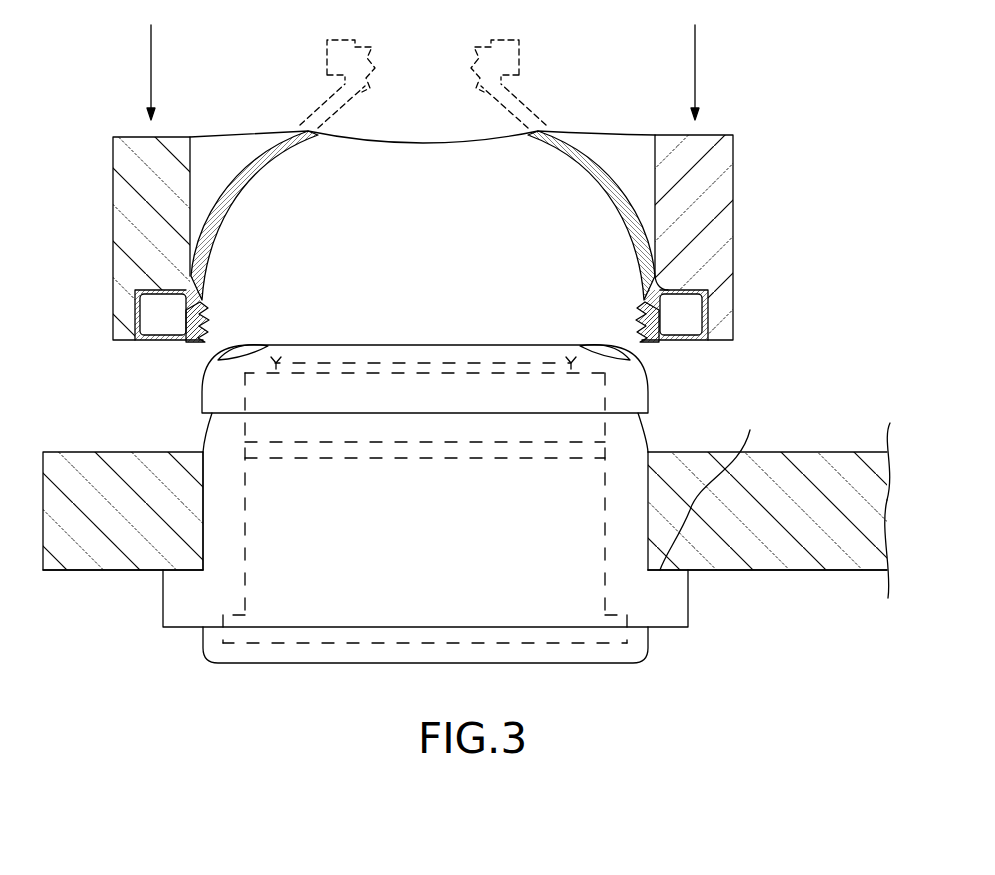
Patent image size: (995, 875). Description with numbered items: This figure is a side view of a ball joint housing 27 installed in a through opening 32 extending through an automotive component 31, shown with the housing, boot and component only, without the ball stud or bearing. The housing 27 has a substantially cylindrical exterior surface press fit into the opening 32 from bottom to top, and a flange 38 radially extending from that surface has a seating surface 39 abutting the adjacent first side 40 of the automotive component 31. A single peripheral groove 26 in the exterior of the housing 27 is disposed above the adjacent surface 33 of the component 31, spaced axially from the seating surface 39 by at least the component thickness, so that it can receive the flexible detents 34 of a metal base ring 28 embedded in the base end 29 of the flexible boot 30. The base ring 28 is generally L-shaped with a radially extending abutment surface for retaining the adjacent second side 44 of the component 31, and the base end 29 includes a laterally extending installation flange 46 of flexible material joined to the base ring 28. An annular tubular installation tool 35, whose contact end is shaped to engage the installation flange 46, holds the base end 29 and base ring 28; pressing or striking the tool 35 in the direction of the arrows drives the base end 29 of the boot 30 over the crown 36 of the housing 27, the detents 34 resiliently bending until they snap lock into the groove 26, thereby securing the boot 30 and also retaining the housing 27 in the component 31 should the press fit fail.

The peripheral groove 26 is at (205, 432).
The ball joint housing 27 is at (195, 650).
The metal base ring 28 is at (680, 341).
The base end 29 is at (213, 289).
The flexible boot 30 is at (550, 113).
The automotive component 31 is at (791, 571).
The through opening 32 is at (203, 525).
The adjacent surface 33 is at (805, 452).
The flexible detents 34 is at (210, 313).
The annular installation tool 35 is at (113, 247).
The crown 36 is at (267, 348).
The flange 38 is at (163, 590).
The seating surface 39 is at (713, 484).
The first side 40 is at (853, 571).
The second side 44 is at (868, 452).
The installation flange 46 is at (690, 290).